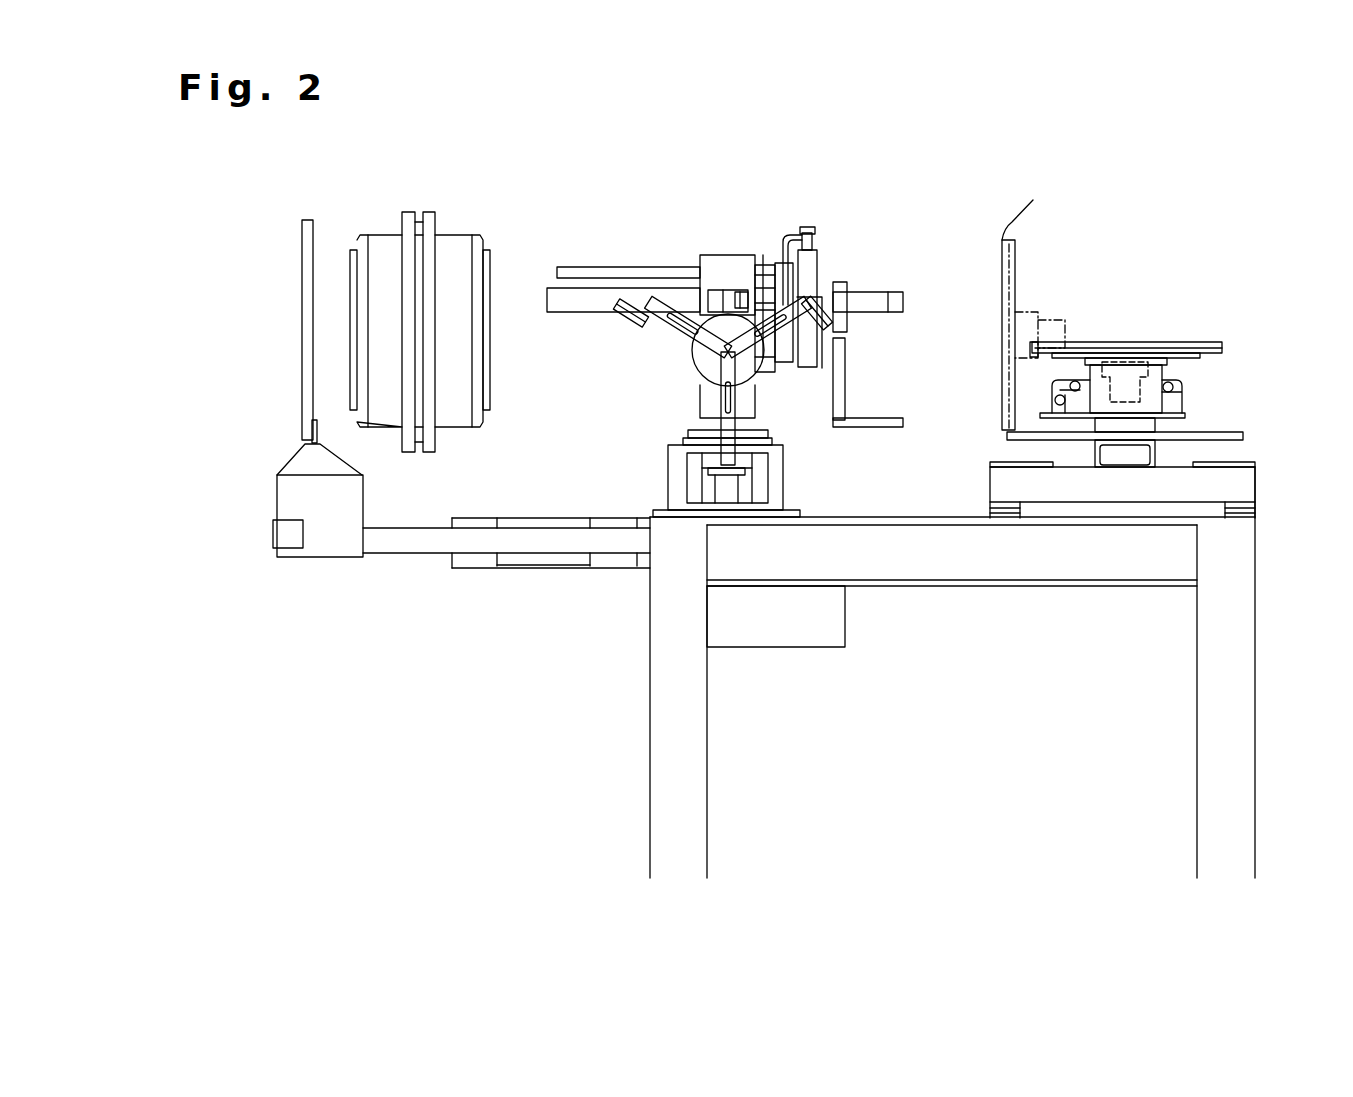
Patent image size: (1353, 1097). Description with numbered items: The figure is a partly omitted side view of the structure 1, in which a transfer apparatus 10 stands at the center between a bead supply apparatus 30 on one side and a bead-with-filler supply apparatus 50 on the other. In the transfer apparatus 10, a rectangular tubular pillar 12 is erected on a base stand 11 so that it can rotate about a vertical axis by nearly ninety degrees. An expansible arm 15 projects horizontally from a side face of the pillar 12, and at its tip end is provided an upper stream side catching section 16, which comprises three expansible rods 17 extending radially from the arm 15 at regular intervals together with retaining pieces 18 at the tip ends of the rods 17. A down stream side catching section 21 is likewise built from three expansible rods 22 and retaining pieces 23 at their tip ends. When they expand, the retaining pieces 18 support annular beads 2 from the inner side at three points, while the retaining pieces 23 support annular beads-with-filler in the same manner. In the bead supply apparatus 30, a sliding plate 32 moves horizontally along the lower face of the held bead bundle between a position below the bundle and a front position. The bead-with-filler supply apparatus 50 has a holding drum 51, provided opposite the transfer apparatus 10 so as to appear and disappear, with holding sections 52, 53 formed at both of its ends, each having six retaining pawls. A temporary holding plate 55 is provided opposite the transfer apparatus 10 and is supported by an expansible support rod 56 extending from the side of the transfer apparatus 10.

The structure 1 is at (834, 116).
The annular beads 2 is at (1012, 226).
The transfer apparatus 10 is at (747, 186).
The base stand 11 is at (668, 469).
The rectangular tubular pillar 12 is at (723, 255).
The expansible arm 15 is at (777, 357).
The upper stream side catching section 16 is at (922, 352).
The expansible rods 17 is at (848, 380).
The retaining pieces 18 is at (893, 292).
The down stream side catching section 21 is at (577, 368).
The expansible rods 22 is at (764, 300).
The retaining pieces 23 is at (818, 300).
The bead supply apparatus 30 is at (1131, 194).
The sliding plate 32 is at (1168, 360).
The bead-with-filler supply apparatus 50 is at (411, 165).
The holding drum 51 is at (450, 232).
The holding section 52 is at (488, 240).
The holding section 53 is at (353, 248).
The temporary holding plate 55 is at (300, 230).
The expansible support rod 56 is at (418, 547).